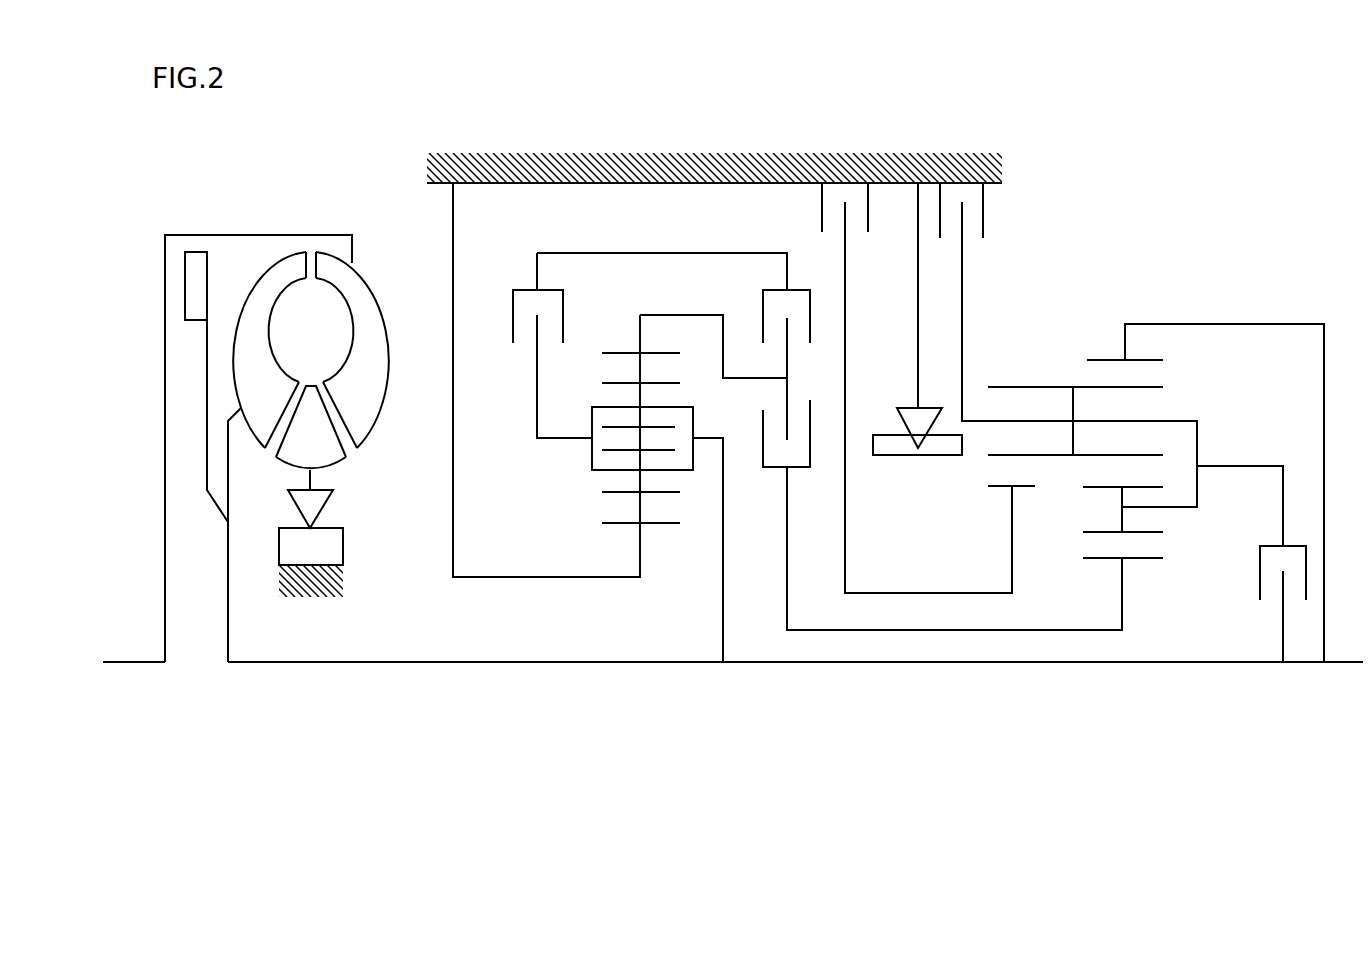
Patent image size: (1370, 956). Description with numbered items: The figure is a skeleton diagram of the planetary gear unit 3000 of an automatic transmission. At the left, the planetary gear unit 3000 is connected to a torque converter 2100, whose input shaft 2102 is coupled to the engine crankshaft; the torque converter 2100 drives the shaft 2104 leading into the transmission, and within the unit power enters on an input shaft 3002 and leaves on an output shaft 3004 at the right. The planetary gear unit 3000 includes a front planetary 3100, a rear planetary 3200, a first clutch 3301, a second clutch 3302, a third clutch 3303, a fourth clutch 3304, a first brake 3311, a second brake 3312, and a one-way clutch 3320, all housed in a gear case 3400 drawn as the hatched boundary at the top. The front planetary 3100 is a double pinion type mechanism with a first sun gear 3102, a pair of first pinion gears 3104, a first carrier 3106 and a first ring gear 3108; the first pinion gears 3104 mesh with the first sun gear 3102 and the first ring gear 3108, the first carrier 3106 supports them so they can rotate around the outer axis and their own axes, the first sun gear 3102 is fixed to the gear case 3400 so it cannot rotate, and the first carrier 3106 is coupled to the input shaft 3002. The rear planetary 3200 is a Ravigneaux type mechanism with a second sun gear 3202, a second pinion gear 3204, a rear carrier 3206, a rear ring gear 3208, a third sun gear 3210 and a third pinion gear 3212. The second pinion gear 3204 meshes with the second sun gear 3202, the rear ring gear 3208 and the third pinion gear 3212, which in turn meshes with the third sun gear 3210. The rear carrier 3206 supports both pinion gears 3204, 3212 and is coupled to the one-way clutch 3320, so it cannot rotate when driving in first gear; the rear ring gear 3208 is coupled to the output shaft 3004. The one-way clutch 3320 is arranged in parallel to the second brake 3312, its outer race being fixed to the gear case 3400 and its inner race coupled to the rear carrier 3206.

The torque converter 2100 is at (283, 210).
The input shaft 2102 is at (143, 666).
The turbine output shaft 2104 is at (282, 666).
The planetary gear unit 3000 is at (800, 125).
The input shaft 3002 is at (700, 666).
The output shaft 3004 is at (1340, 666).
The front planetary 3100 is at (624, 477).
The first sun gear 3102 is at (658, 525).
The first pinion gears 3104 is at (650, 383).
The first carrier 3106 is at (590, 447).
The first ring gear 3108 is at (630, 353).
The rear planetary 3200 is at (1115, 441).
The second sun gear 3202 is at (1005, 486).
The second pinion gear 3204 is at (1043, 387).
The rear carrier 3206 is at (1195, 421).
The rear ring gear 3208 is at (1108, 360).
The third sun gear 3210 is at (1108, 558).
The third pinion gear 3212 is at (1151, 532).
The C1 clutch 3301 is at (790, 470).
The C2 clutch 3302 is at (1259, 582).
The C3 clutch 3303 is at (760, 310).
The C4 clutch 3304 is at (532, 290).
The B1 brake 3311 is at (820, 195).
The B2 brake 3312 is at (985, 205).
The one-way clutch 3320 is at (900, 457).
The gear case 3400 is at (638, 150).